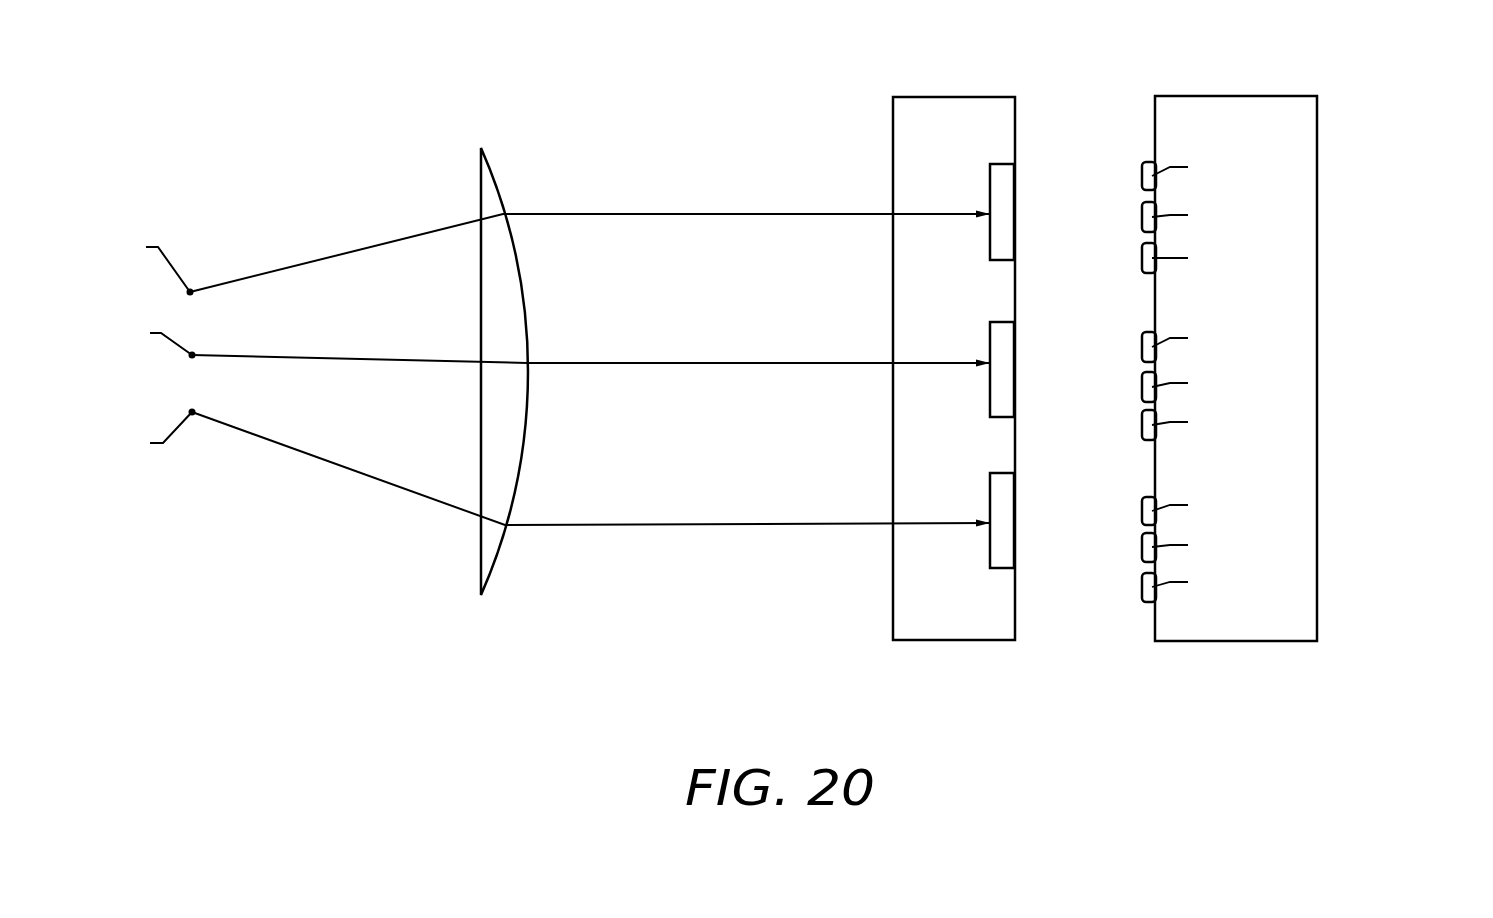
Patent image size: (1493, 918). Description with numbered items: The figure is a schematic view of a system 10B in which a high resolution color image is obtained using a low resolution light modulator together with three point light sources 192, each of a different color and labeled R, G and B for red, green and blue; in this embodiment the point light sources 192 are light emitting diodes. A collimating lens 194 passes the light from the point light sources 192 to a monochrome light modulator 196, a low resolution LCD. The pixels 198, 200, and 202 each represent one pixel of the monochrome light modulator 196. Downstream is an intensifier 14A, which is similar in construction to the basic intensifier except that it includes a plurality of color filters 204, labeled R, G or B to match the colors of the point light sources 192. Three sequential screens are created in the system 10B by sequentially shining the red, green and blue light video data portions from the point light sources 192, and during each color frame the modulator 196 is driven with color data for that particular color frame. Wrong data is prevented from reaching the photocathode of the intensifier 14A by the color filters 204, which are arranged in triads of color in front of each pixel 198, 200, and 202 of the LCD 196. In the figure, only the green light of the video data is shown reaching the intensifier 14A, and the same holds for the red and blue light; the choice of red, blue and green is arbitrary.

The system 10B is at (422, 582).
The point light sources 192 is at (200, 252).
The collimating lens 194 is at (490, 195).
The monochrome light modulator 196 is at (933, 117).
The pixel 198 is at (1003, 195).
The pixel 200 is at (1003, 372).
The pixel 202 is at (1007, 530).
The intensifier 14A is at (1347, 222).
The color filters 204 is at (1222, 650).